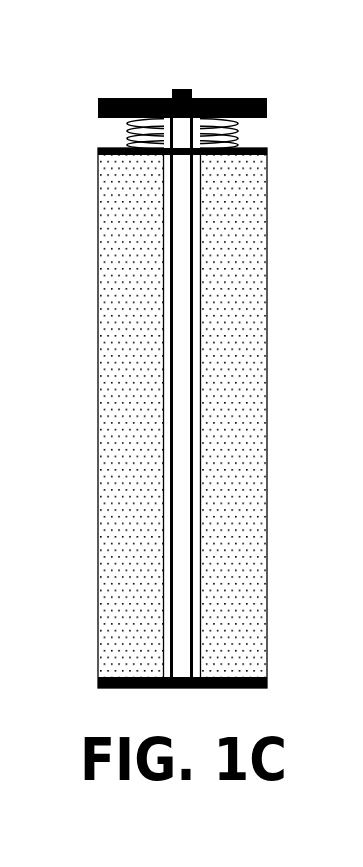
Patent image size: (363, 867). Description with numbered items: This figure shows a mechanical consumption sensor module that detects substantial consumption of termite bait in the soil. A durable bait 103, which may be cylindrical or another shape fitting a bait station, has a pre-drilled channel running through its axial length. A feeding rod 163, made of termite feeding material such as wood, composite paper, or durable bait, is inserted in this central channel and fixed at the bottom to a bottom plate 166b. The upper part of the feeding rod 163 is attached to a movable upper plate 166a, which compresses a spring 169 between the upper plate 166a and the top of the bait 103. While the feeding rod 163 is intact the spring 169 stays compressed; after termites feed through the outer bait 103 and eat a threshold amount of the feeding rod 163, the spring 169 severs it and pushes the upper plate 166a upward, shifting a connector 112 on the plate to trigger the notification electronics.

The upper plate 166a is at (135, 99).
The connector 112 is at (182, 89).
The spring 169 is at (238, 128).
The bait 103 is at (257, 425).
The feeding rod 163 is at (180, 500).
The bottom plate 166b is at (255, 688).